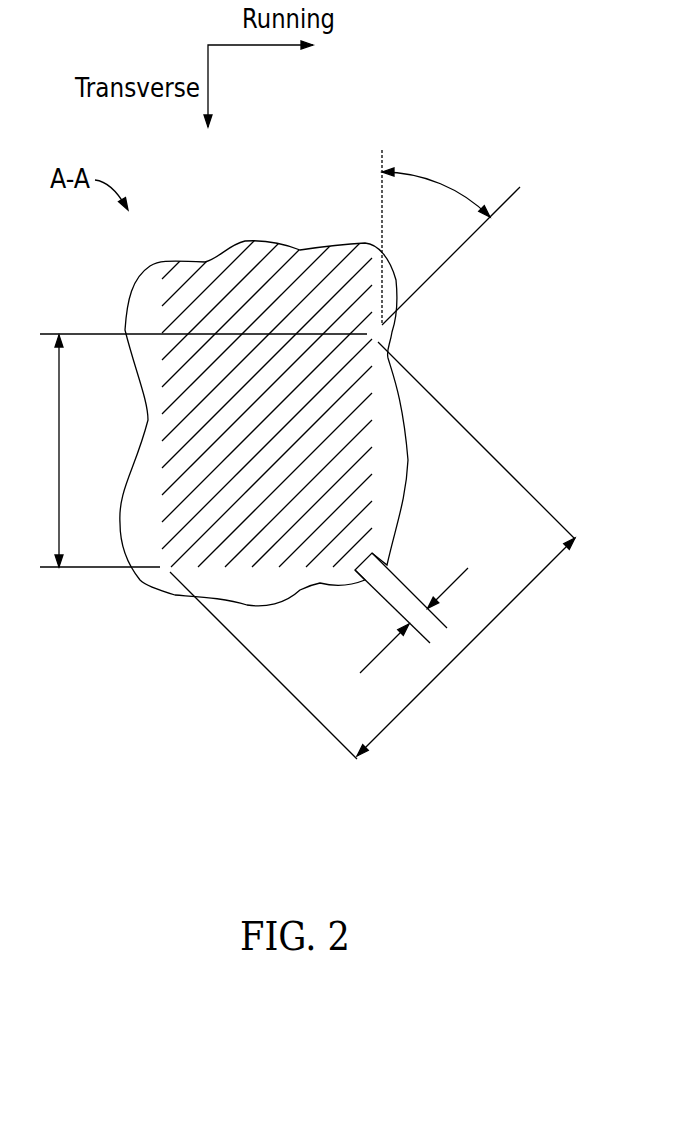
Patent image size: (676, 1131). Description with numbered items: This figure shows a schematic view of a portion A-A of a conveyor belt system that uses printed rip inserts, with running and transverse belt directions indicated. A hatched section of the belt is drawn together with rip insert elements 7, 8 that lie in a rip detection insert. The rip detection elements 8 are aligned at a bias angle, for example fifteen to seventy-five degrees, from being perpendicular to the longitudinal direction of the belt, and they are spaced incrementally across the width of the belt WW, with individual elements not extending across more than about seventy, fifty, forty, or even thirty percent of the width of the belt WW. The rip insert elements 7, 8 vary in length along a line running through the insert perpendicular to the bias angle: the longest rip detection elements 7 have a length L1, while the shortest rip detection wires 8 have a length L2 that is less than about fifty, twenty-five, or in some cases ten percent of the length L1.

The rip insert element 7 is at (363, 343).
The rip detection element 8 is at (366, 560).
The length of the longest rip detection element L1 is at (372, 648).
The length of the shortest rip detection element L2 is at (399, 637).
The width of the belt WW is at (203, 450).